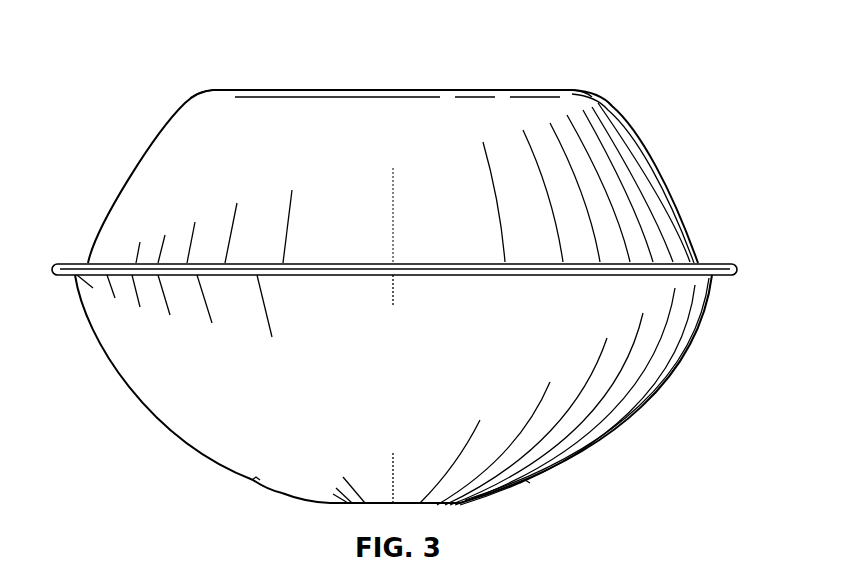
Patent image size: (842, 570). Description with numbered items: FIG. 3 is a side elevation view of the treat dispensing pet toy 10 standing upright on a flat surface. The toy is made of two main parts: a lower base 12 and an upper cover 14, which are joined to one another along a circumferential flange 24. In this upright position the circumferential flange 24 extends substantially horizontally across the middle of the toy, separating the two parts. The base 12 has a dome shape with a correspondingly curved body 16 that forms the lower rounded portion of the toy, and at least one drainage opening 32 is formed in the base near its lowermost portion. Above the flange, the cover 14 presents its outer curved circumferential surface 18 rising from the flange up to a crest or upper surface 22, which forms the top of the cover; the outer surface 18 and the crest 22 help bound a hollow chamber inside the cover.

The treat dispensing pet toy 10 is at (393, 68).
The base 12 is at (640, 410).
The cover 14 is at (645, 126).
The curved body 16 is at (200, 425).
The outer curved circumferential surface 18 is at (150, 189).
The crest 22 is at (213, 88).
The circumferential flange 24 is at (722, 263).
The drainage opening 32 is at (262, 483).